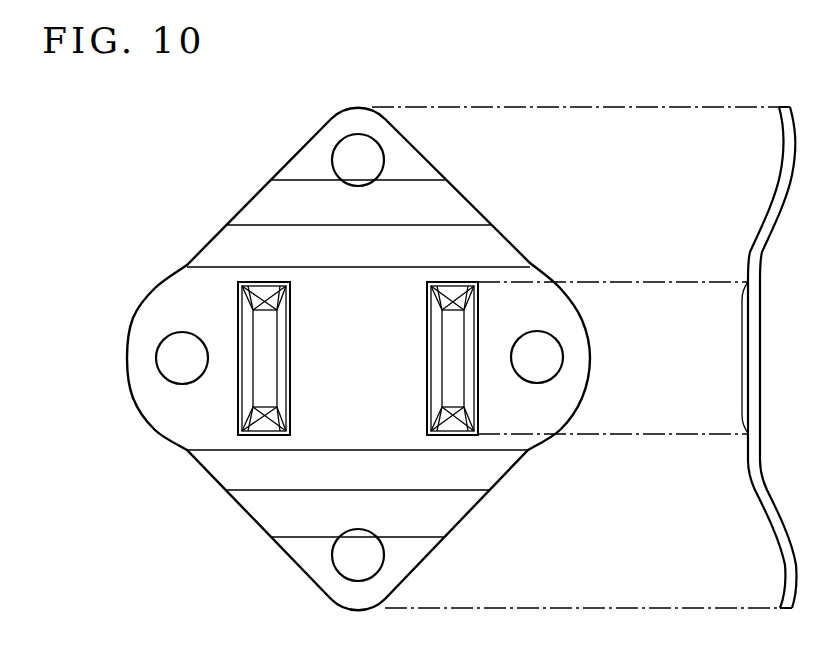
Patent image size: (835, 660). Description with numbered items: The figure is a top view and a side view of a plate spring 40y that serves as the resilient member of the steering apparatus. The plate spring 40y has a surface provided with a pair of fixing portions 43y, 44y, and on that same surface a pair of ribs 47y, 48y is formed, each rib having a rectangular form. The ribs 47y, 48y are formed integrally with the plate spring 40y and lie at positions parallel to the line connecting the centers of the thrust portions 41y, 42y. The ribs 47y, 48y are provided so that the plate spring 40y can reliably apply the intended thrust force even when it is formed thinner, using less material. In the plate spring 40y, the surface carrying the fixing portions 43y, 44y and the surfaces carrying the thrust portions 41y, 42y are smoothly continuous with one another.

The plate spring 40y is at (215, 229).
The thrust portion 41y is at (357, 134).
The thrust portion 42y is at (358, 582).
The fixing portion 43y is at (156, 353).
The fixing portion 44y is at (563, 357).
The rib 47y is at (250, 390).
The rib 48y is at (463, 388).